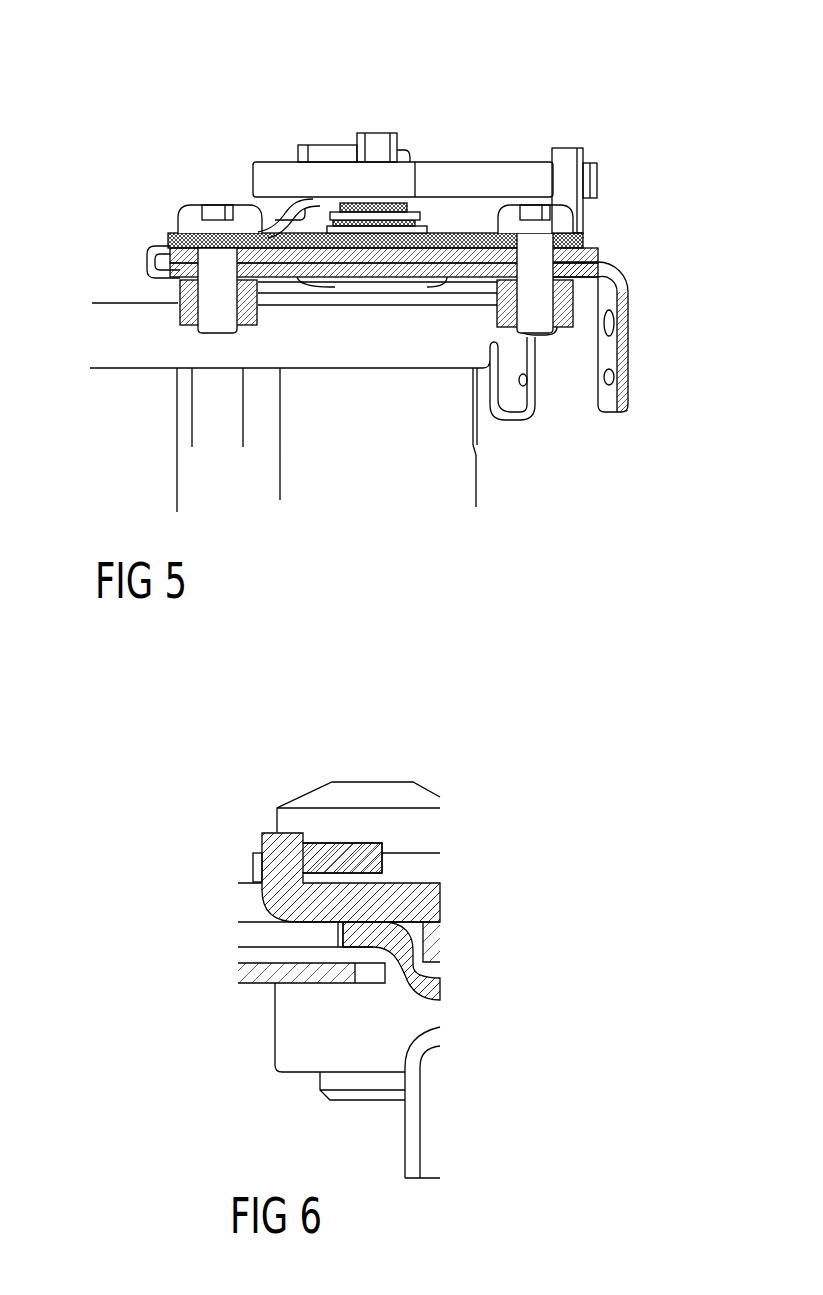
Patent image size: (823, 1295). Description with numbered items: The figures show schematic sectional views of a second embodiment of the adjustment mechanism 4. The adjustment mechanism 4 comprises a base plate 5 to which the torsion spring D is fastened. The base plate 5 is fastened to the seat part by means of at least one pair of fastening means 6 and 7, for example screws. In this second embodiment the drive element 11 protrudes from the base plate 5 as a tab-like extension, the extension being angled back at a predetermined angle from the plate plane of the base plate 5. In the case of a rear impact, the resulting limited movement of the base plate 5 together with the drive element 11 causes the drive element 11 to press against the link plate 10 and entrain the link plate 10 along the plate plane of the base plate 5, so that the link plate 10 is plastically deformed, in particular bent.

In FIG. 5, the adjustment mechanism 4 is at (535, 141).
In FIG. 5, the torsion spring D is at (462, 178).
In FIG. 5, the base plate 5 is at (150, 248).
In FIG. 6, the base plate 5 is at (430, 903).
In FIG. 5, the fastening means 6 is at (195, 215).
In FIG. 5, the fastening means 7 is at (537, 265).
In FIG. 5, the link plate 10 is at (170, 237).
In FIG. 6, the link plate 10 is at (337, 853).
In FIG. 6, the drive element 11 is at (285, 847).